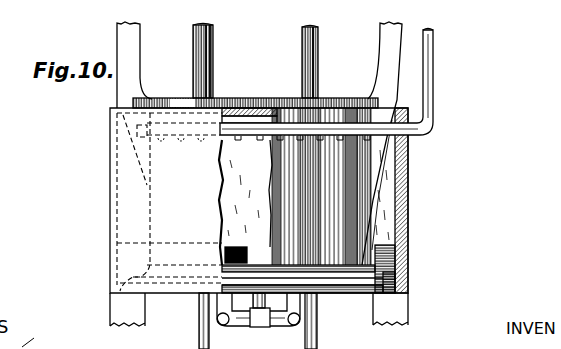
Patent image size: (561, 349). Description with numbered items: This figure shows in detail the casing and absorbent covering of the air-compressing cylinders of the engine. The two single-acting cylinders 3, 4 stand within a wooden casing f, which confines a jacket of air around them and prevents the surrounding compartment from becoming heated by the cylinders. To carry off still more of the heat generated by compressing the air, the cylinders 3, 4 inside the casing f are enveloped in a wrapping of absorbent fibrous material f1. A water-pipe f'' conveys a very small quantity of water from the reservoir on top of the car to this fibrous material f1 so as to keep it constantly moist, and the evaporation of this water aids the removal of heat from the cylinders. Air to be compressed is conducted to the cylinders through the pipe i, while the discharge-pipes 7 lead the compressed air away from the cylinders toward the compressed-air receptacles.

The single-acting cylinder 3 is at (322, 62).
The single-acting cylinder 4 is at (190, 98).
The discharge-pipe 7 is at (199, 323).
The pipe i is at (258, 320).
The wooden casing f is at (409, 200).
The wrapping of absorbent fibrous material f1 is at (417, 212).
The water-pipe f'' is at (293, 83).